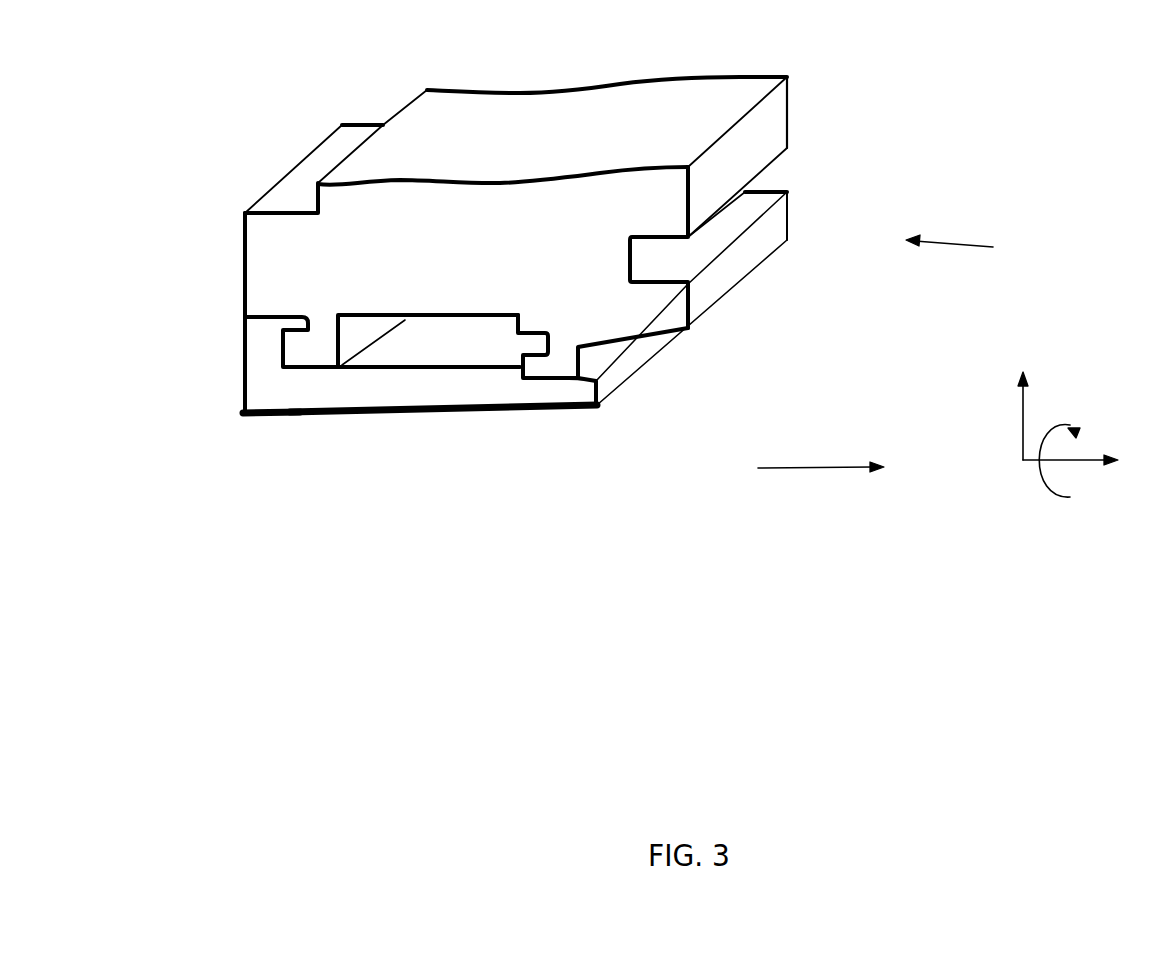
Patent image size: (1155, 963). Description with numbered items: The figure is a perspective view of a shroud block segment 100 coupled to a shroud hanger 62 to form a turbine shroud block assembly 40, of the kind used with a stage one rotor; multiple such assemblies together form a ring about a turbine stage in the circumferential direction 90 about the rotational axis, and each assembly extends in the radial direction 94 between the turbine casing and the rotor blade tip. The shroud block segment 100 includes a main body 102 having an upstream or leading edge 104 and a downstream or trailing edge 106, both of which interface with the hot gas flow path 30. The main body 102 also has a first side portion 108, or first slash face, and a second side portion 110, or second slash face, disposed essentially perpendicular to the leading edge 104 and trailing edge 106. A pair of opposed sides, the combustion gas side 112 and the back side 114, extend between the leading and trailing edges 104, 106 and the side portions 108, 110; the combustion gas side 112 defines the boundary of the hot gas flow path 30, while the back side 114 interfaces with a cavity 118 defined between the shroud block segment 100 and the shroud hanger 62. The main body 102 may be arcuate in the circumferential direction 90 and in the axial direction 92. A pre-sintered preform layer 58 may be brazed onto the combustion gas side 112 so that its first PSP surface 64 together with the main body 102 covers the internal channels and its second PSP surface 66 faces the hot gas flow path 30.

The hot gas flow path 30 is at (820, 470).
The shroud block assembly 40 is at (976, 250).
The pre-sintered preform layer 58 is at (327, 420).
The shroud hanger 62 is at (317, 252).
The first PSP surface 64 is at (292, 420).
The second PSP surface 66 is at (292, 408).
The circumferential direction 90 is at (1045, 480).
The axial direction 92 is at (1085, 455).
The radial direction 94 is at (1020, 418).
The shroud block segment 100 is at (430, 383).
The main body 102 is at (352, 388).
The leading edge 104 is at (247, 337).
The trailing edge 106 is at (660, 358).
The first side portion 108 is at (540, 418).
The second side portion 110 is at (816, 88).
The combustion gas side 112 is at (622, 427).
The back side 114 is at (477, 345).
The cavity 118 is at (457, 333).